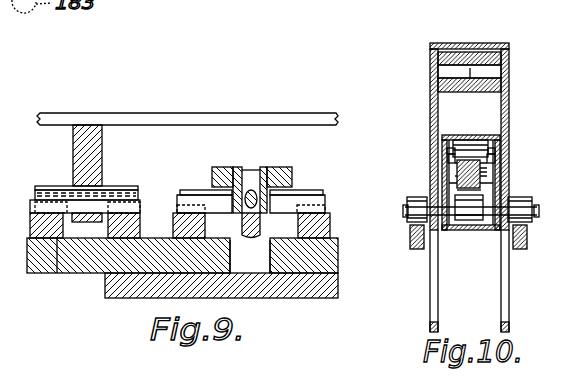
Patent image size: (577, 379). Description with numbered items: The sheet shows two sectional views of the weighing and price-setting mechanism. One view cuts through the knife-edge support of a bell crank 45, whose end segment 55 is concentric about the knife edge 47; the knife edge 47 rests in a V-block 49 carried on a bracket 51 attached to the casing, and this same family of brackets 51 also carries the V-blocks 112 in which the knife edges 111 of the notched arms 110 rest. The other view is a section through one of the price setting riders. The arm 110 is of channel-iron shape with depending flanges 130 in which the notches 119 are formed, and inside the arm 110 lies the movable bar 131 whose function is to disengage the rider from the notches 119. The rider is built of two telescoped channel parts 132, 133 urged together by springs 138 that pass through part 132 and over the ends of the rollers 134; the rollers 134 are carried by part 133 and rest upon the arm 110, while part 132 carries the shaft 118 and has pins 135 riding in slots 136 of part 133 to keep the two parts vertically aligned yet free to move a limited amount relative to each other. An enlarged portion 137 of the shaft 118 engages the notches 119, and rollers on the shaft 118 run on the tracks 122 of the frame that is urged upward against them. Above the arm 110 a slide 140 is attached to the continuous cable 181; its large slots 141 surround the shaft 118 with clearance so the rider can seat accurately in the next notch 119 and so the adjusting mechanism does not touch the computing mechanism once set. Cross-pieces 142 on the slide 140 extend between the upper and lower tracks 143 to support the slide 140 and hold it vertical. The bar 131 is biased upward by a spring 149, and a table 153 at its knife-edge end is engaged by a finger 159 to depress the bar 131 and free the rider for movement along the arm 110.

In FIG. 9, the bell crank 45 is at (162, 125).
In FIG. 9, the segment 55 is at (90, 145).
In FIG. 9, the knife edge 47 is at (107, 197).
In FIG. 9, the V-block 49 is at (117, 227).
In FIG. 9, the bracket 51 is at (133, 285).
In FIG. 9, the V-block 112 is at (175, 222).
In FIG. 9, the knife edge 111 is at (188, 192).
In FIG. 9, the notched arm 110 is at (237, 167).
In FIG. 10, the notched arm 110 is at (480, 157).
In FIG. 9, the finger 159 is at (251, 190).
In FIG. 9, the table 153 is at (242, 217).
In FIG. 9, the spring 149 is at (258, 238).
In FIG. 10, the slide 140 is at (510, 85).
In FIG. 10, the track 143 is at (503, 72).
In FIG. 10, the cross-piece 142 is at (448, 72).
In FIG. 10, the cable 181 is at (471, 70).
In FIG. 10, the rider part 133 is at (455, 133).
In FIG. 10, the roller 134 is at (462, 145).
In FIG. 10, the pin 135 is at (444, 151).
In FIG. 10, the spring 138 is at (448, 160).
In FIG. 10, the slot 136 is at (450, 172).
In FIG. 10, the depending flange 130 is at (452, 183).
In FIG. 10, the movable bar 131 is at (488, 170).
In FIG. 10, the shaft 118 is at (512, 192).
In FIG. 10, the enlarged portion 137 is at (478, 222).
In FIG. 10, the notch 119 is at (463, 228).
In FIG. 10, the track 122 is at (411, 236).
In FIG. 10, the rider part 132 is at (434, 250).
In FIG. 10, the slot 141 is at (501, 290).